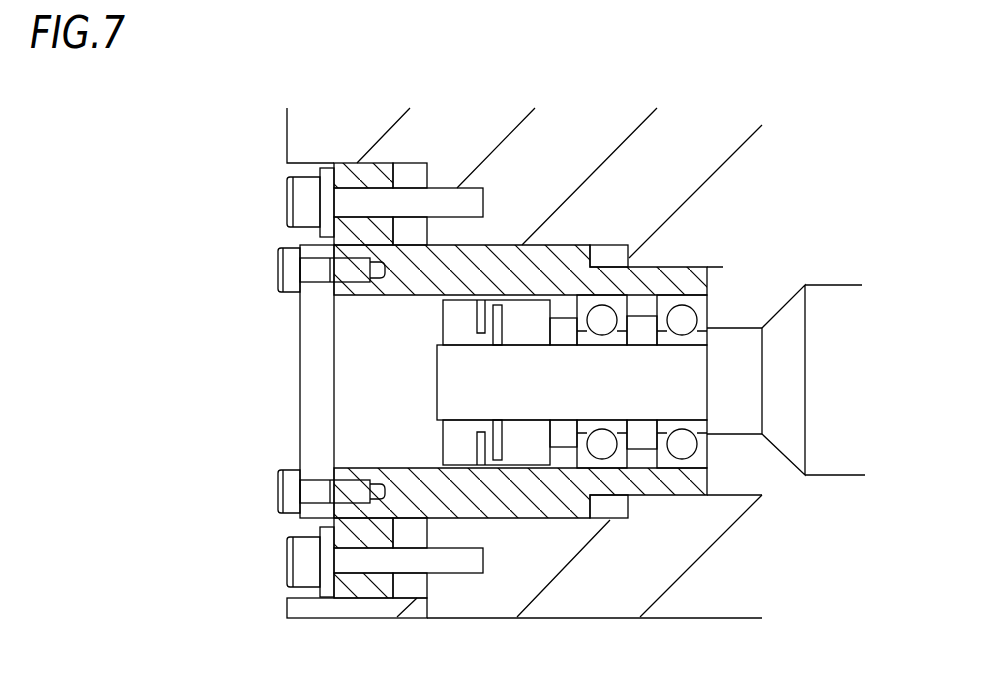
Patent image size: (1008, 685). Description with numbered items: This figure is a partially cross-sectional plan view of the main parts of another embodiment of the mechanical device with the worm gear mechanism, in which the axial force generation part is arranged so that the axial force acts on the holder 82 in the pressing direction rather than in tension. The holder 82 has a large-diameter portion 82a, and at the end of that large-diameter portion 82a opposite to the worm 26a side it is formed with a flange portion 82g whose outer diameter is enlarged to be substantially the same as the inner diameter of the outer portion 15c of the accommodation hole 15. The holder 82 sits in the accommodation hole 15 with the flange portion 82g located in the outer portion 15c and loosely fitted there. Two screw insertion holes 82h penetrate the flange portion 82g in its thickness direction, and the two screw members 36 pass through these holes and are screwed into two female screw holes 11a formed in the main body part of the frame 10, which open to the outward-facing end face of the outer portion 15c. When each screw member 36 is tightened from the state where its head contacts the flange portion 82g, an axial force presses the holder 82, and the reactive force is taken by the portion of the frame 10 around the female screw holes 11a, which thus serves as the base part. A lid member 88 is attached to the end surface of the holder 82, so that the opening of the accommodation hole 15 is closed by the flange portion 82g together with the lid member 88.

The frame 10 is at (285, 127).
The female screw hole 11a is at (443, 187).
The accommodation hole 15 is at (737, 497).
The outer portion of the accommodation hole 15c is at (310, 602).
The worm 26a is at (836, 478).
The screw member 36 is at (305, 195).
The holder 82 is at (604, 508).
The large-diameter portion 82a is at (520, 483).
The flange portion 82g is at (357, 585).
The screw insertion hole 82h is at (306, 248).
The lid member 88 is at (297, 383).